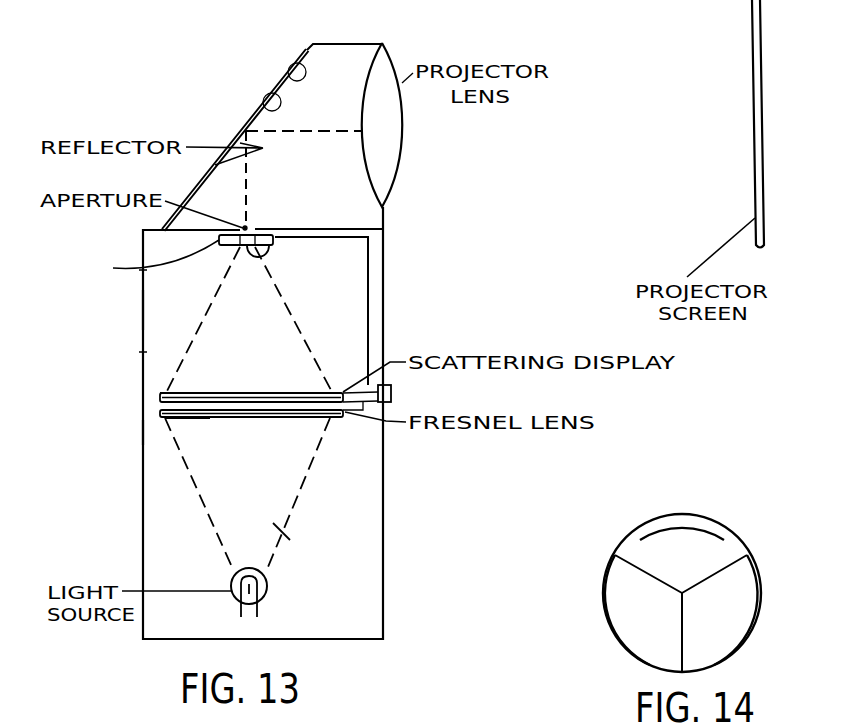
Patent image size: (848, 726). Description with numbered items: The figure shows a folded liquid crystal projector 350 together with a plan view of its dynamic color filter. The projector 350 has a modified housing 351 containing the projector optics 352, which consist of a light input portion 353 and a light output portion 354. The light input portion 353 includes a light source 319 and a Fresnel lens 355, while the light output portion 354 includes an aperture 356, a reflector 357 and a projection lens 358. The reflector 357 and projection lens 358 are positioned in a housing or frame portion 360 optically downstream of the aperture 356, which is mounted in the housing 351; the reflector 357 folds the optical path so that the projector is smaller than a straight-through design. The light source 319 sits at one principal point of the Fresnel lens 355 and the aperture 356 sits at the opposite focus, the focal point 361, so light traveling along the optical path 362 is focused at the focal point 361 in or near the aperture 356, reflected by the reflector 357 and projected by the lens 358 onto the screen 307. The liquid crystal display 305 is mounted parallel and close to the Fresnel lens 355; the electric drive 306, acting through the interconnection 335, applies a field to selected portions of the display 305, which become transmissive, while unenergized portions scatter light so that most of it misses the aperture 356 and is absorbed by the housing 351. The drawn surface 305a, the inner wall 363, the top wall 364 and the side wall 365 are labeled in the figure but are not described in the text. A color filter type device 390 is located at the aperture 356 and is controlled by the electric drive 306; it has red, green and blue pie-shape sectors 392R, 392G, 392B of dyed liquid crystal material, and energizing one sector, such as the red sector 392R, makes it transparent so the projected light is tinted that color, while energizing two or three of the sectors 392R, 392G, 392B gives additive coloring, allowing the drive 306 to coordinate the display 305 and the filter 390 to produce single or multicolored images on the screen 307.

In FIG. 13, the liquid crystal display 305 is at (291, 393).
In FIG. 13, the display surface 305a is at (228, 393).
In FIG. 13, the electric drive 306 is at (395, 394).
In FIG. 13, the projection screen 307 is at (752, 95).
In FIG. 13, the light source 319 is at (270, 590).
In FIG. 13, the interconnection 335 is at (362, 412).
In FIG. 13, the liquid crystal projector 350 is at (132, 367).
In FIG. 13, the housing 351 is at (145, 433).
In FIG. 13, the projector optics 352 is at (184, 520).
In FIG. 13, the light input portion 353 is at (170, 462).
In FIG. 13, the light output portion 354 is at (282, 264).
In FIG. 13, the Fresnel lens 355 is at (212, 418).
In FIG. 13, the aperture 356 is at (258, 228).
In FIG. 13, the reflector 357 is at (274, 92).
In FIG. 13, the projection lens 358 is at (386, 70).
In FIG. 13, the housing or frame portion 360 is at (303, 63).
In FIG. 13, the focal point 361 is at (270, 248).
In FIG. 13, the optical path 362 is at (286, 536).
In FIG. 13, the inner housing 363 is at (385, 252).
In FIG. 13, the housing top wall 364 is at (307, 228).
In FIG. 13, the housing wall 365 is at (133, 305).
In FIG. 13, the color filter type device 390 is at (144, 261).
In FIG. 14, the color filter type device 390 is at (614, 525).
In FIG. 14, the red sector 392R is at (710, 523).
In FIG. 14, the green sector 392G is at (612, 615).
In FIG. 14, the blue sector 392B is at (737, 638).